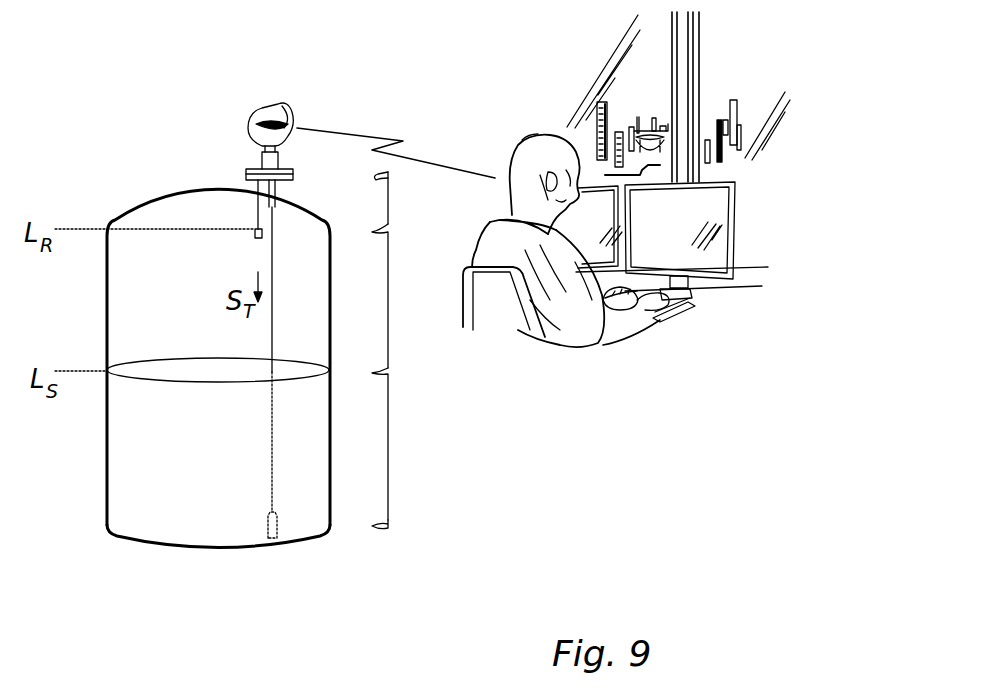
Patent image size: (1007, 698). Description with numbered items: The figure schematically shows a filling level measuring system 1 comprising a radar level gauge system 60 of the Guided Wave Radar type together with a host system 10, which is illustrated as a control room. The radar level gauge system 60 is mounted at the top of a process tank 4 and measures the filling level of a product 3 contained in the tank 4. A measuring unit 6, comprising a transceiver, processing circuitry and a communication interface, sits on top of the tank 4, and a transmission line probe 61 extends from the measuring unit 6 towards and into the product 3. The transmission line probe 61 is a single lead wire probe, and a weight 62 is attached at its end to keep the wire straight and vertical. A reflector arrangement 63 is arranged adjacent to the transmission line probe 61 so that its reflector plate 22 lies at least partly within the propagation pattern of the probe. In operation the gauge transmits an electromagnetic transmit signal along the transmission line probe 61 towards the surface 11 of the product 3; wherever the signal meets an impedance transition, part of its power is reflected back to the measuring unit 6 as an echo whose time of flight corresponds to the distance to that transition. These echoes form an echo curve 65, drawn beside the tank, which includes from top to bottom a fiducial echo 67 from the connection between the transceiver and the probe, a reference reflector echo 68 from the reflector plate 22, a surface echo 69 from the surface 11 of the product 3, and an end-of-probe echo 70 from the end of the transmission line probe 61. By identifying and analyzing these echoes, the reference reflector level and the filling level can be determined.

The filling level measuring system 1 is at (425, 68).
The product 3 is at (197, 470).
The tank 4 is at (107, 314).
The measuring unit 6 is at (262, 112).
The host system 10 is at (718, 72).
The surface 11 is at (186, 371).
The reflector plate 22 is at (254, 231).
The radar level gauge system 60 is at (225, 102).
The transmission line probe 61 is at (273, 278).
The weight 62 is at (278, 525).
The reflector arrangement 63 is at (250, 194).
The echo curve 65 is at (423, 452).
The fiducial echo 67 is at (375, 178).
The reference reflector echo 68 is at (388, 232).
The surface echo 69 is at (388, 370).
The end-of-probe echo 70 is at (380, 527).